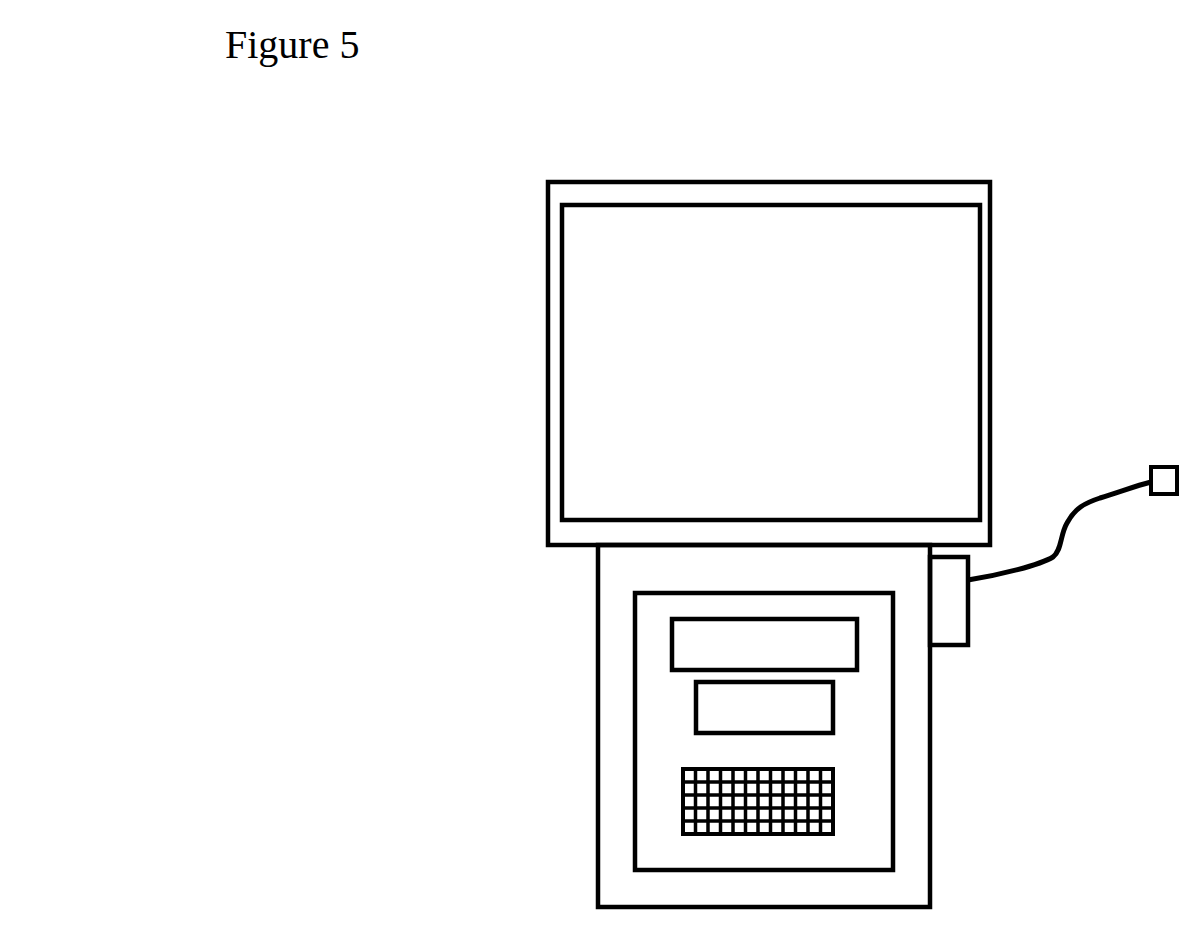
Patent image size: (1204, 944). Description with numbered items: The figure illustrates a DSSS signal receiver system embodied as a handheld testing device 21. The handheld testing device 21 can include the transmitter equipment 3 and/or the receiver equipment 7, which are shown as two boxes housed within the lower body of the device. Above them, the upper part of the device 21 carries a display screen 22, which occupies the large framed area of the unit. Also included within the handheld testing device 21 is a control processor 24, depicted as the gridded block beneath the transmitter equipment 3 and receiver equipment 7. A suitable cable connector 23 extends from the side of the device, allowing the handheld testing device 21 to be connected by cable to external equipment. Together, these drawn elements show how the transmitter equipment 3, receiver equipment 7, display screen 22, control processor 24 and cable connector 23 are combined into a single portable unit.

The handheld testing device 21 is at (1017, 267).
The display screen 22 is at (771, 362).
The transmitter equipment 3 is at (685, 632).
The receiver equipment 7 is at (708, 707).
The control processor 24 is at (683, 815).
The cable connector 23 is at (1065, 545).